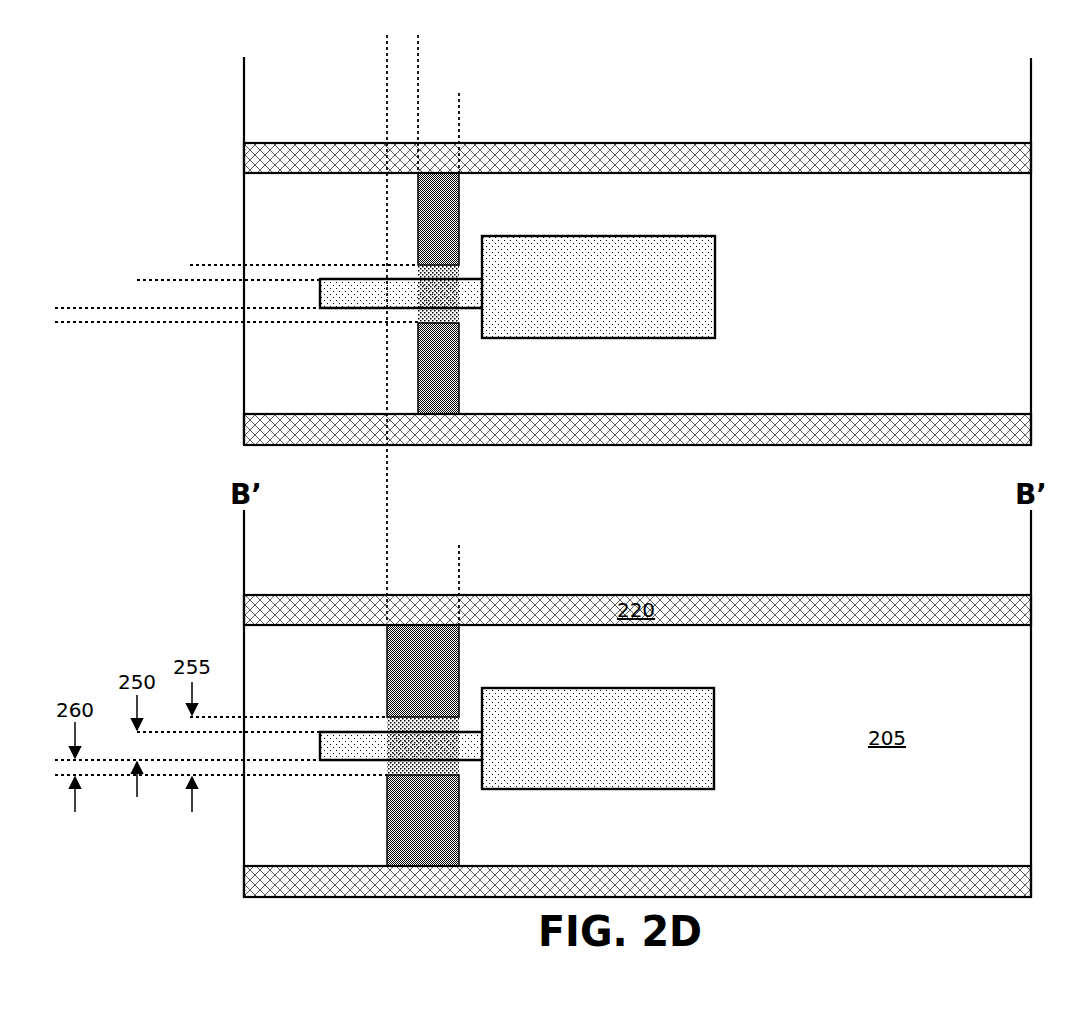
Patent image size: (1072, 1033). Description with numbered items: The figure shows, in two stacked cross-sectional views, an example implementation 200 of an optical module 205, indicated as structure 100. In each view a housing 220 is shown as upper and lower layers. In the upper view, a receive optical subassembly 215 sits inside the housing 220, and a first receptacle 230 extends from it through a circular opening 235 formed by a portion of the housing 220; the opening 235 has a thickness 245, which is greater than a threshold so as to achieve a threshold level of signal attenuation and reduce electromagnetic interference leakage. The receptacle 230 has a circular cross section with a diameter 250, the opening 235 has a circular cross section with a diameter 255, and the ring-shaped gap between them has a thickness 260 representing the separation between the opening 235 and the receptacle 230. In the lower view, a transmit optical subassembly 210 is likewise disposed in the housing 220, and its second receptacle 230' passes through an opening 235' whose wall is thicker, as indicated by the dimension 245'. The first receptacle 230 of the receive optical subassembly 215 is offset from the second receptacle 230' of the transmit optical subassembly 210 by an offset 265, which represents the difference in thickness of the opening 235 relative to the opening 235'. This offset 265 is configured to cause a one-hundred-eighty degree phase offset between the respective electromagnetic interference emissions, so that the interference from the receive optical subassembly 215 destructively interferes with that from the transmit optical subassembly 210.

The example implementation 200 is at (133, 60).
The semiconductor structure 100 is at (222, 142).
The optical module 205 is at (887, 287).
The transmit optical subassembly 210 is at (598, 738).
The receive optical subassembly 215 is at (598, 287).
The housing 220 is at (637, 158).
The receptacle 230 is at (401, 293).
The second receptacle 230' is at (401, 746).
The opening 235 is at (399, 293).
The opening 235' is at (382, 745).
The thickness 245 is at (466, 133).
The pillar width (alternate) 245' is at (452, 585).
The diameter 250 is at (137, 345).
The diameter 255 is at (192, 358).
The thickness 260 is at (75, 358).
The offset 265 is at (350, 72).